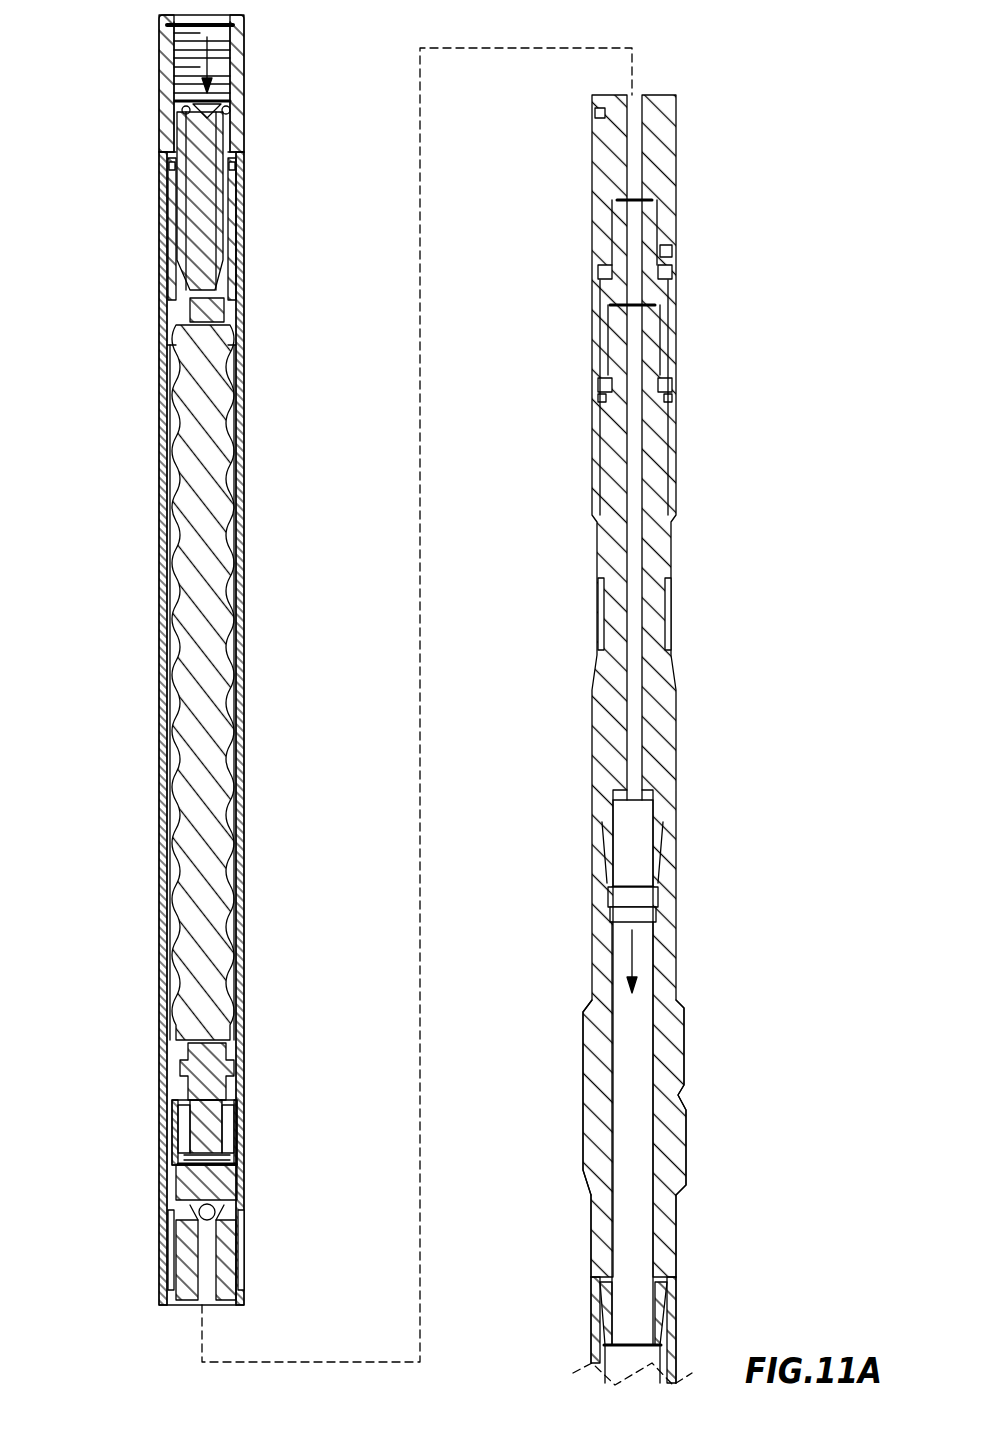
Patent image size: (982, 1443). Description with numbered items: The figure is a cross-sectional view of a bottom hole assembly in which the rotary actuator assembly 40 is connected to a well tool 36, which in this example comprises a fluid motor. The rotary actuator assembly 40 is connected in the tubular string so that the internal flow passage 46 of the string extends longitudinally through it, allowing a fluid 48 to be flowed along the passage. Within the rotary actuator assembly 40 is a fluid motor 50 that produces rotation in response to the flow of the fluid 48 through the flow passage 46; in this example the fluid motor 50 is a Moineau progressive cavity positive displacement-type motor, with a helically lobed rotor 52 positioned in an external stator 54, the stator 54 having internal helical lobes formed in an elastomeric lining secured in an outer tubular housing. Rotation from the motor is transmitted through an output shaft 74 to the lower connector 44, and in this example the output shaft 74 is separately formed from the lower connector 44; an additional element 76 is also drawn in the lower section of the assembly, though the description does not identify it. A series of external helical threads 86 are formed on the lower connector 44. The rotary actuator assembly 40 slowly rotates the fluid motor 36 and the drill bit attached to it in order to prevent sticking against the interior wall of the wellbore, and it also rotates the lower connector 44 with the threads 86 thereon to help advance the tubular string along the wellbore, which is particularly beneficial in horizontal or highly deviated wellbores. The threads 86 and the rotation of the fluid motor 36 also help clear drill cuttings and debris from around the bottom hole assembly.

The well tool 36 is at (688, 1320).
The rotary actuator assembly 40 is at (148, 376).
The lower connector 44 is at (678, 1213).
The internal flow passage 46 is at (205, 1246).
The fluid 48 is at (248, 48).
The fluid motor 50 is at (157, 740).
The helically lobed rotor 52 is at (175, 873).
The external stator 54 is at (157, 1005).
The output shaft 74 is at (677, 723).
The flex coupling 76 is at (172, 1133).
The external helical threads 86 is at (690, 1030).